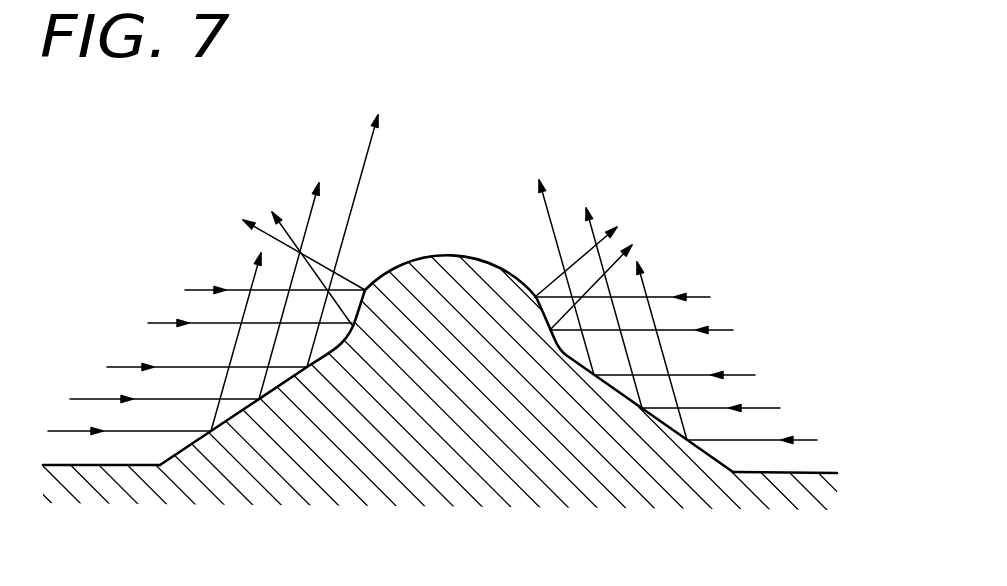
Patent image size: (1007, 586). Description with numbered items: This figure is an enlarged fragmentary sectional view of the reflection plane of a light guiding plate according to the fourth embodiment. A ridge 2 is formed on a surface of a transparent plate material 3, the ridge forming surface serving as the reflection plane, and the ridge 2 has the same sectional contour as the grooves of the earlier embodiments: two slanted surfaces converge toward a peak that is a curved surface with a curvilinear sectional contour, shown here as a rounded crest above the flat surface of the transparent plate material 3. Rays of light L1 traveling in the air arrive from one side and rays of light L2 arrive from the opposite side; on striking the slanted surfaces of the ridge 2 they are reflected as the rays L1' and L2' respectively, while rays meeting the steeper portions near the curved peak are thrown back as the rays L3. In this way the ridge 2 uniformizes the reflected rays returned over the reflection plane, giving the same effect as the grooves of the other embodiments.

The ridge 2 is at (455, 257).
The transparent plate material 3 is at (110, 483).
The ray of light L1 is at (206, 361).
The reflected ray of light L1' is at (294, 267).
The ray of light L2 is at (676, 369).
The reflected ray of light L2' is at (613, 283).
The reflected ray of light L3 is at (267, 243).